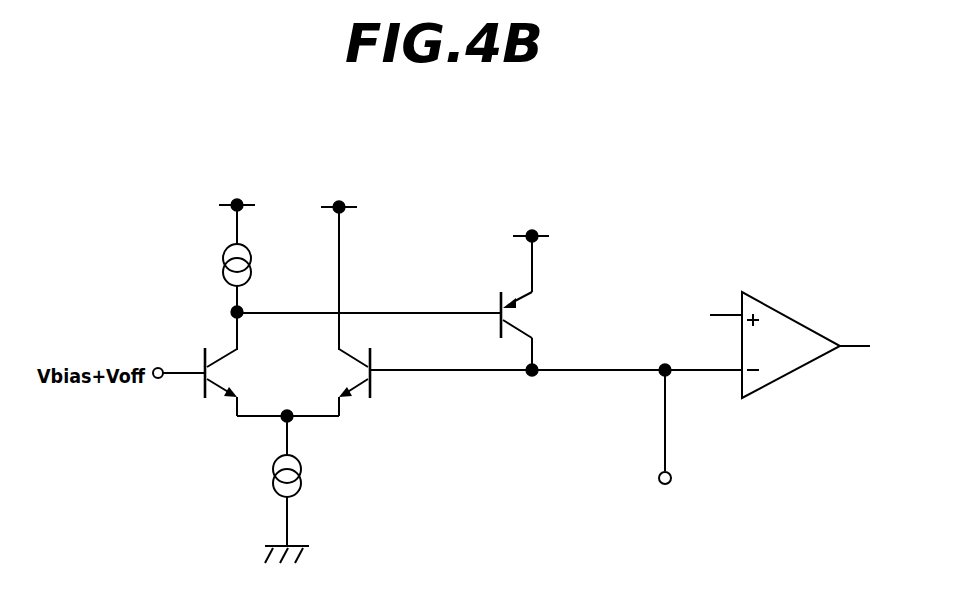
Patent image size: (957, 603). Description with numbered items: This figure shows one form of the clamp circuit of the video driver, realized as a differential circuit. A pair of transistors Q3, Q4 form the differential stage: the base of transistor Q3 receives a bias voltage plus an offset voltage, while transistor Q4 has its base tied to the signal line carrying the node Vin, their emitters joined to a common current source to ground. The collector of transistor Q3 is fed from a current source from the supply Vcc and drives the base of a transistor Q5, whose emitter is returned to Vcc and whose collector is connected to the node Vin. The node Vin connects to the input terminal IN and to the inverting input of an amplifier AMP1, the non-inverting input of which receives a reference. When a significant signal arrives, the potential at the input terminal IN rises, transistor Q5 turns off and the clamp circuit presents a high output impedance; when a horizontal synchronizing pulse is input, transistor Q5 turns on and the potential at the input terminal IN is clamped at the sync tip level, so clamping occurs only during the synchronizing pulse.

The transistor Q3 is at (210, 373).
The transistor Q4 is at (340, 373).
The transistor Q5 is at (534, 315).
The amplifier AMP1 is at (786, 373).
The input terminal IN is at (672, 478).
The input voltage node Vin is at (679, 357).
The power supply voltage Vcc is at (408, 220).